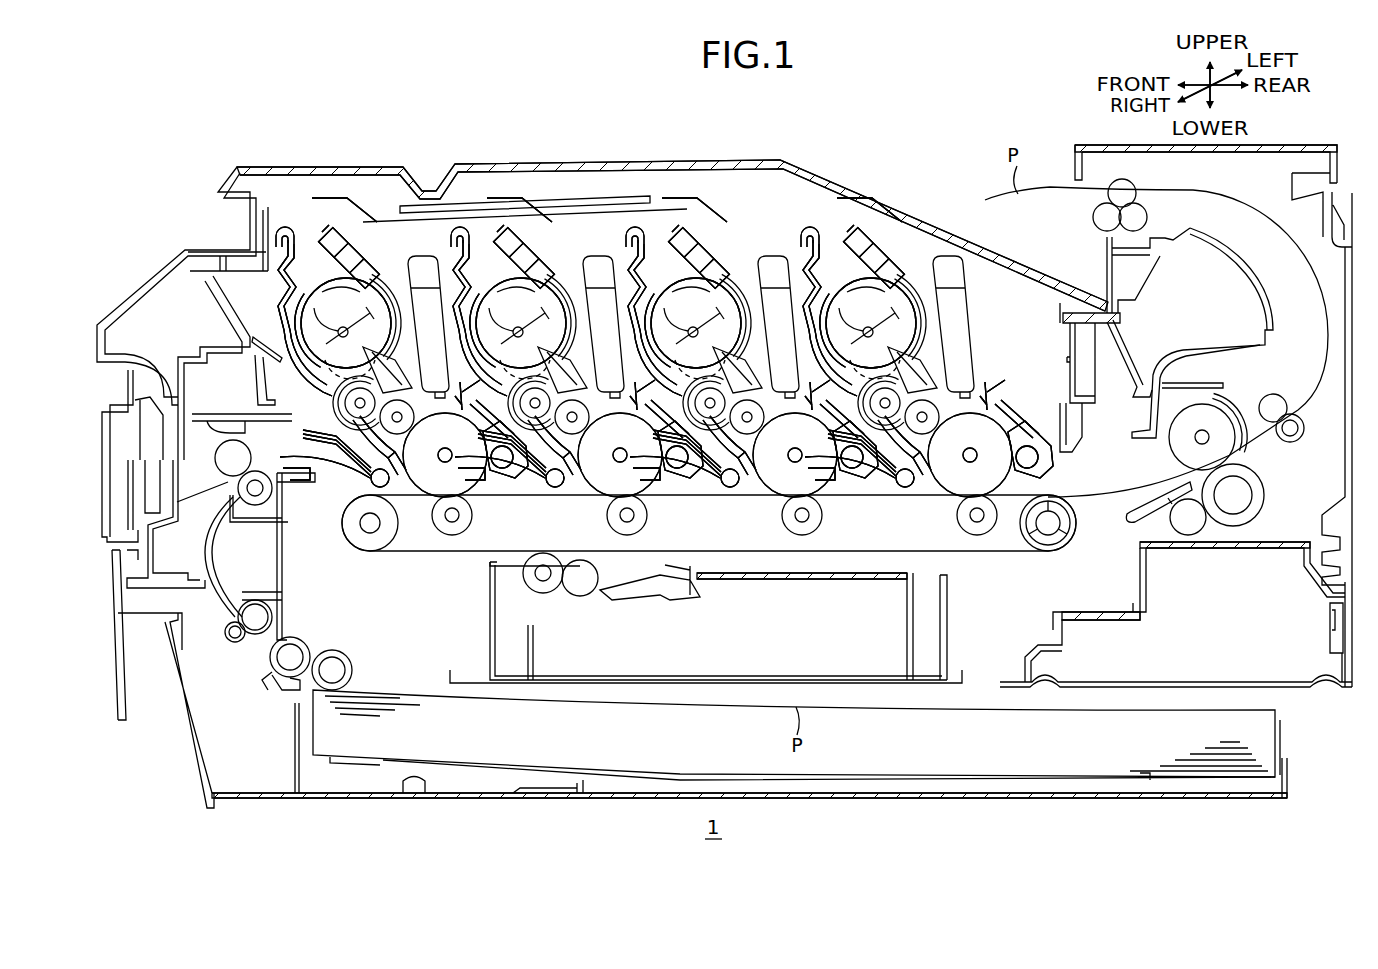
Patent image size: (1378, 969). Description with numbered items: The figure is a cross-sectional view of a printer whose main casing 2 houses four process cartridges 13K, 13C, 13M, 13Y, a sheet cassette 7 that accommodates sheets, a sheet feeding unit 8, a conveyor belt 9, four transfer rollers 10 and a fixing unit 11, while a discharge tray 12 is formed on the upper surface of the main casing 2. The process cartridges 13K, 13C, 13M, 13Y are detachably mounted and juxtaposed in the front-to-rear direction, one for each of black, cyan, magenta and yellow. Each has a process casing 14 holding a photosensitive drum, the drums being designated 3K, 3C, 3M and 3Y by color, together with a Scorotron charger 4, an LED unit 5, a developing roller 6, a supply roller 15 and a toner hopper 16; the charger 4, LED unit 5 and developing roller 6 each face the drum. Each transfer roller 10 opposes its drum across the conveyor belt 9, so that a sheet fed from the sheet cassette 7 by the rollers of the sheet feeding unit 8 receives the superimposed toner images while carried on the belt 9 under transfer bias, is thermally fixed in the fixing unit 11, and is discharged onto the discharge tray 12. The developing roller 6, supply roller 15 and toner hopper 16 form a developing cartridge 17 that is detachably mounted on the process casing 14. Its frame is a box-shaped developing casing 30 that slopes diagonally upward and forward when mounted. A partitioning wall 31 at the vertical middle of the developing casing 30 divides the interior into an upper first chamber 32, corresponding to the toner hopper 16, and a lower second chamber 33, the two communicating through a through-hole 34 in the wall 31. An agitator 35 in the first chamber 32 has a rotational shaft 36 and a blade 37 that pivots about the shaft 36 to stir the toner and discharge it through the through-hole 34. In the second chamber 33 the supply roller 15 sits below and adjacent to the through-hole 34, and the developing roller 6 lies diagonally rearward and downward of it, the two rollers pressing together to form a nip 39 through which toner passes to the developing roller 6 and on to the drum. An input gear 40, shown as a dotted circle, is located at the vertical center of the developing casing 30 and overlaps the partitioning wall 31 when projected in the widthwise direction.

The main casing 2 is at (200, 771).
The photosensitive drum 3K is at (424, 474).
The photosensitive drum 3Y is at (599, 474).
The photosensitive drum 3M is at (774, 474).
The photosensitive drum 3C is at (949, 474).
The Scorotron charger 4 is at (1007, 408).
The LED unit 5 is at (690, 310).
The developing roller 6 is at (665, 408).
The sheet cassette 7 is at (295, 744).
The sheet feeding unit 8 is at (255, 665).
The conveyor belt 9 is at (509, 498).
The transfer roller 10 is at (703, 523).
The fixing unit 11 is at (1268, 473).
The discharge tray 12 is at (887, 216).
The process cartridge 13K is at (298, 224).
The process cartridge 13Y is at (473, 224).
The process cartridge 13M is at (648, 224).
The process cartridge 13C is at (823, 224).
The process casing 14 is at (665, 310).
The supply roller 15 is at (338, 416).
The toner hopper 16 is at (605, 247).
The developing cartridge 17 is at (605, 251).
The developing casing 30 is at (608, 296).
The partitioning wall 31 is at (613, 331).
The first chamber 32 is at (595, 223).
The second chamber 33 is at (380, 445).
The through-hole 34 is at (653, 316).
The agitator 35 is at (599, 280).
The rotational shaft 36 is at (590, 317).
The blade 37 is at (617, 303).
The nip 39 is at (650, 370).
The input gear 40 is at (604, 362).